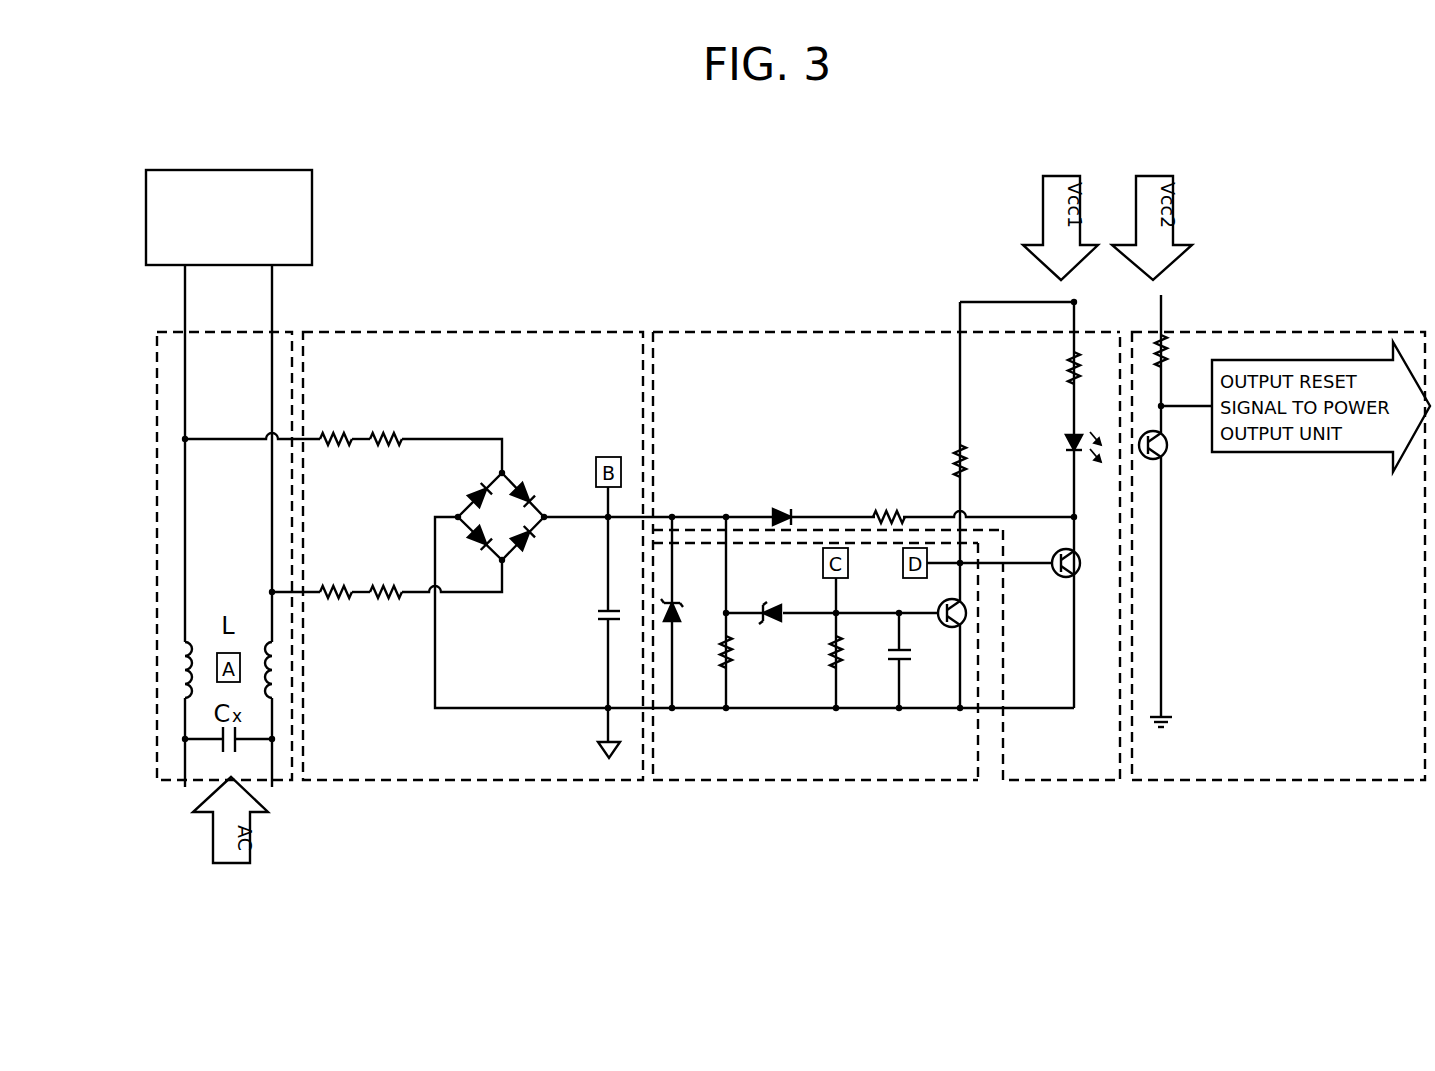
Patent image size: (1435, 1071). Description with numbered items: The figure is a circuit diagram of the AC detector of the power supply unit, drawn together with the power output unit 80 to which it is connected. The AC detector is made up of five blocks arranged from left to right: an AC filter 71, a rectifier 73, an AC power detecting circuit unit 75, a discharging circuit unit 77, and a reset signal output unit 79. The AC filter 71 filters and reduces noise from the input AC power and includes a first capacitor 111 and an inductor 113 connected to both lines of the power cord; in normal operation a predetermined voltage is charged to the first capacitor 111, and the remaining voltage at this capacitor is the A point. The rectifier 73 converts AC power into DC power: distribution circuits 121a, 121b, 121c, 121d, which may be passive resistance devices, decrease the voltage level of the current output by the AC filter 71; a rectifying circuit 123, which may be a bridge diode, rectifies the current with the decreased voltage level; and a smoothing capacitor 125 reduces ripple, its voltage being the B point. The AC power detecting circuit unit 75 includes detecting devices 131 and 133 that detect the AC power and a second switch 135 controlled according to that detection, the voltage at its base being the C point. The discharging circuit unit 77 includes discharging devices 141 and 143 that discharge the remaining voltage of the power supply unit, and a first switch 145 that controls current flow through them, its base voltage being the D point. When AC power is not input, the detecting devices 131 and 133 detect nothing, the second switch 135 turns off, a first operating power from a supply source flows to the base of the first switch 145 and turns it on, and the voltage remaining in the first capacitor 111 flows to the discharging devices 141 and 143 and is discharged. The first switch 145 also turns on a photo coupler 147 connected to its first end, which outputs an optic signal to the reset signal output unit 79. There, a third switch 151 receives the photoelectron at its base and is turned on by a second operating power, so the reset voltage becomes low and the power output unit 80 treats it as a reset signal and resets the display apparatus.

The power output unit 80 is at (312, 218).
The AC filter 71 is at (165, 782).
The rectifier 73 is at (456, 782).
The AC power detecting circuit unit 75 is at (800, 782).
The discharging circuit unit 77 is at (1063, 782).
The reset signal output unit 79 is at (1287, 782).
The first capacitor 111 is at (218, 733).
The inductor 113 is at (188, 650).
The distribution circuit 121a is at (336, 600).
The distribution circuit 121b is at (386, 600).
The distribution circuit 121c is at (336, 432).
The distribution circuit 121d is at (385, 432).
The rectifying circuit 123 is at (517, 478).
The smoothing capacitor 125 is at (595, 614).
The detecting device 131 is at (678, 622).
The detecting device 133 is at (774, 622).
The second switch 135 is at (952, 626).
The discharging device 141 is at (777, 511).
The discharging device 143 is at (884, 512).
The first switch 145 is at (1081, 557).
The photo coupler 147 is at (1062, 440).
The third switch 151 is at (1167, 451).